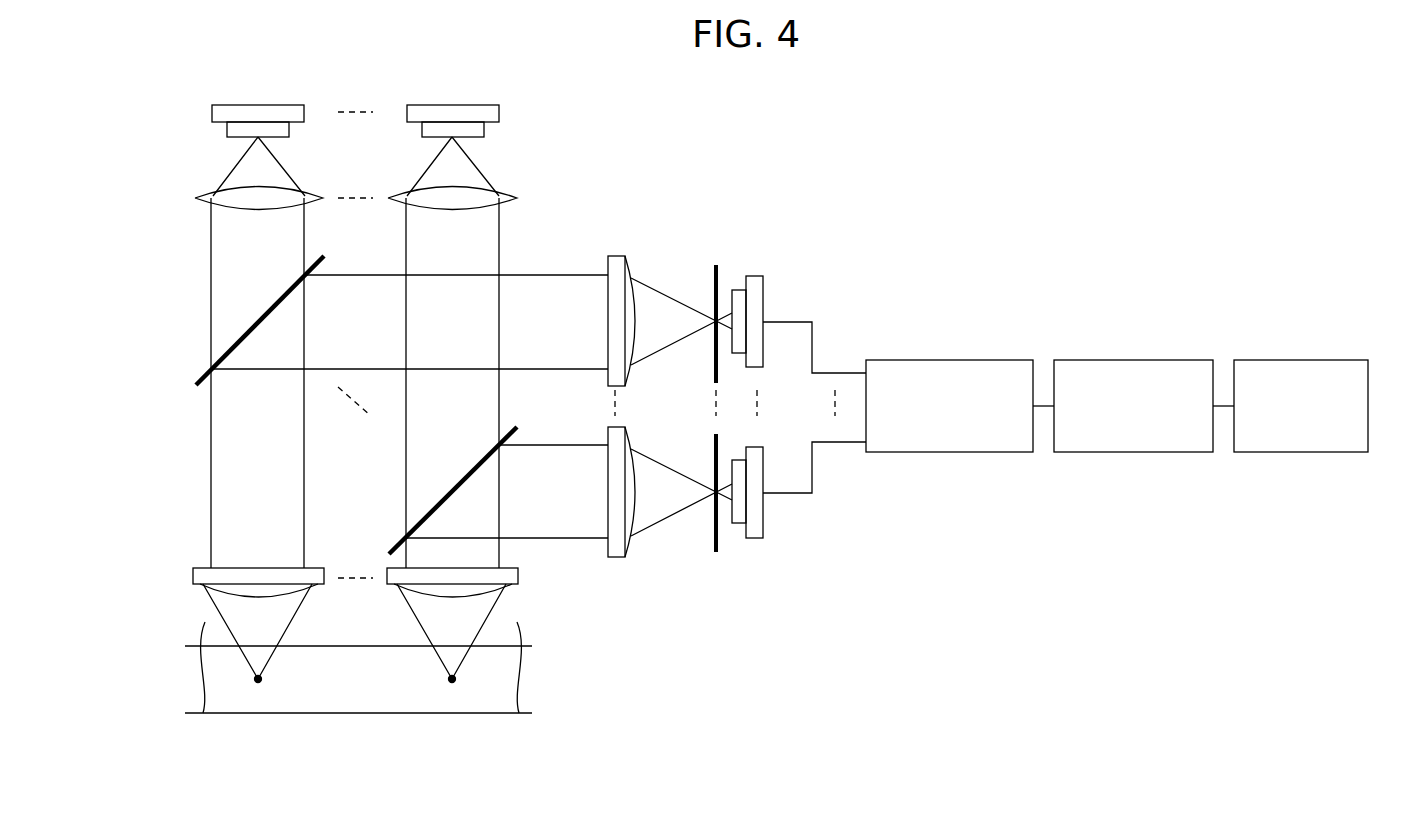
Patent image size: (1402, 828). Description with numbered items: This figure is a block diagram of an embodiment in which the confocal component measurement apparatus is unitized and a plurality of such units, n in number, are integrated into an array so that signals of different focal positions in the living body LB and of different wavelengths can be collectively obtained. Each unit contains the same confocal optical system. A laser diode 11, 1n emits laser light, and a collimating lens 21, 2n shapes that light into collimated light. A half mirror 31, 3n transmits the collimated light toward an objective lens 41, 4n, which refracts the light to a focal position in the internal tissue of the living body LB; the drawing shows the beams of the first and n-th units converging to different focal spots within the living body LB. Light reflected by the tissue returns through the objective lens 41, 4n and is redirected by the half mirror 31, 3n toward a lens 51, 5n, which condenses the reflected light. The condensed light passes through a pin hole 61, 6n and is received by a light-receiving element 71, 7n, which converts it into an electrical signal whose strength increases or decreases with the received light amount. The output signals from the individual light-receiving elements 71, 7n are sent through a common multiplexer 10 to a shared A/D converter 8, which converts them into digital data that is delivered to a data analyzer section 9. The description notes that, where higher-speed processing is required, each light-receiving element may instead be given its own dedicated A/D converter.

The laser diode 11 is at (212, 112).
The laser diode 1n is at (499, 112).
The collimating lens 21 is at (205, 196).
The collimating lens 2n is at (517, 197).
The half mirror 31 is at (205, 372).
The half mirror 3n is at (517, 428).
The objective lens 41 is at (193, 572).
The objective lens 4n is at (518, 572).
The lens 51 is at (623, 255).
The lens 5n is at (614, 557).
The pin hole 61 is at (716, 265).
The pin hole 6n is at (716, 552).
The light-receiving element 71 is at (752, 276).
The light-receiving element 7n is at (755, 538).
The multiplexer 10 is at (968, 360).
The A/D converter 8 is at (1150, 360).
The data analyzer section 9 is at (1303, 360).
The living body LB is at (512, 668).